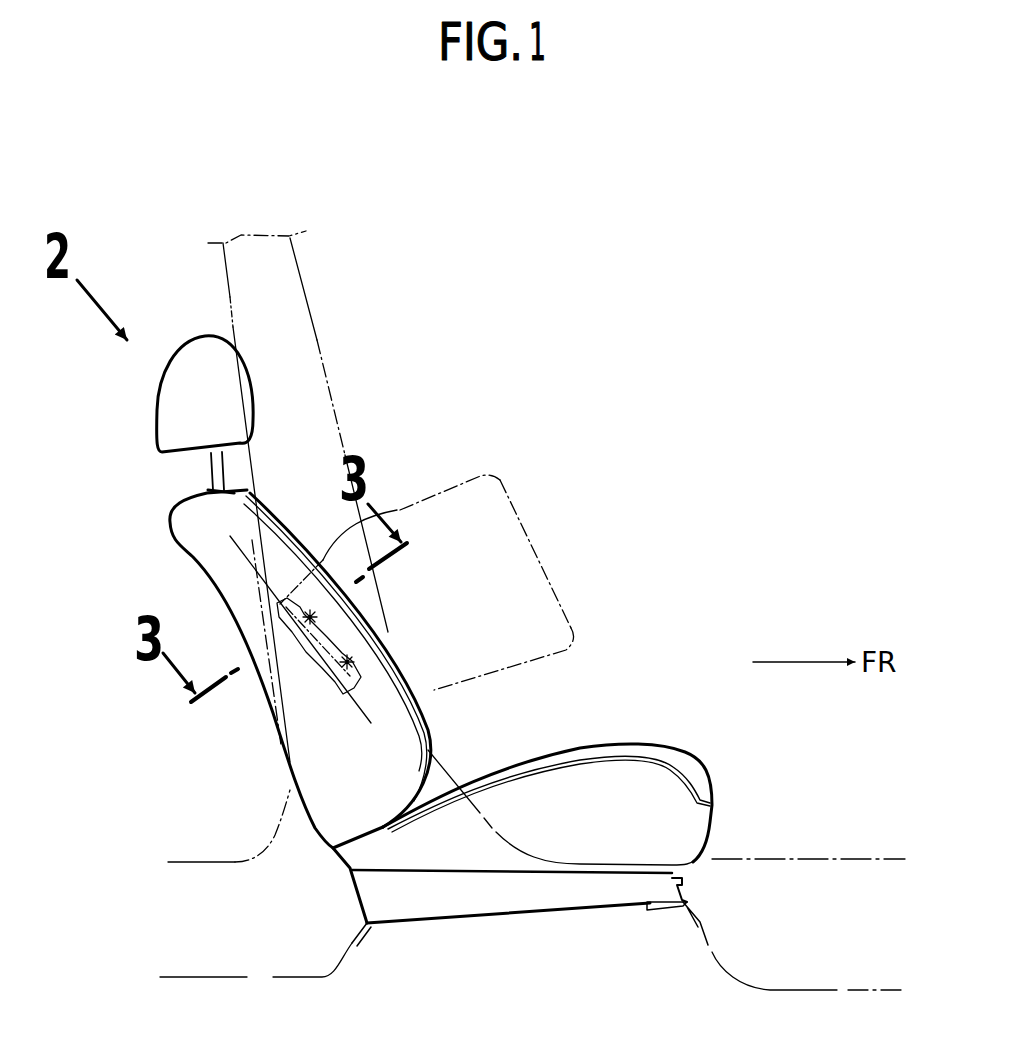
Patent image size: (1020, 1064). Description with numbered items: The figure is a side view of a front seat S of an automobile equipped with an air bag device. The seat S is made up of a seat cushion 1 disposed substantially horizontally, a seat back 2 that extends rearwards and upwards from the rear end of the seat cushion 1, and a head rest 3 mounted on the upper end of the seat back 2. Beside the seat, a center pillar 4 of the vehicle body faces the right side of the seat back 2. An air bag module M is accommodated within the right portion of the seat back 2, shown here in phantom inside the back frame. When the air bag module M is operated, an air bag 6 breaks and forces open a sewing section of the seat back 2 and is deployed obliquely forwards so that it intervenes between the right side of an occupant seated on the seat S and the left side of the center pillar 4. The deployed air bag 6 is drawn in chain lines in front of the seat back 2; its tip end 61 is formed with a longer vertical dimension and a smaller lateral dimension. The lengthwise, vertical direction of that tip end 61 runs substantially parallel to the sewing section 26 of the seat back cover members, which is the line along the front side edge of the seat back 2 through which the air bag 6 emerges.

The seat cushion 1 is at (699, 819).
The seat back 2 is at (190, 540).
The head rest 3 is at (157, 401).
The center pillar 4 is at (318, 381).
The air bag 6 is at (489, 472).
The tip end 61 is at (532, 540).
The sewing section 26 is at (388, 638).
The air bag module M is at (309, 664).
The front seat S is at (590, 703).